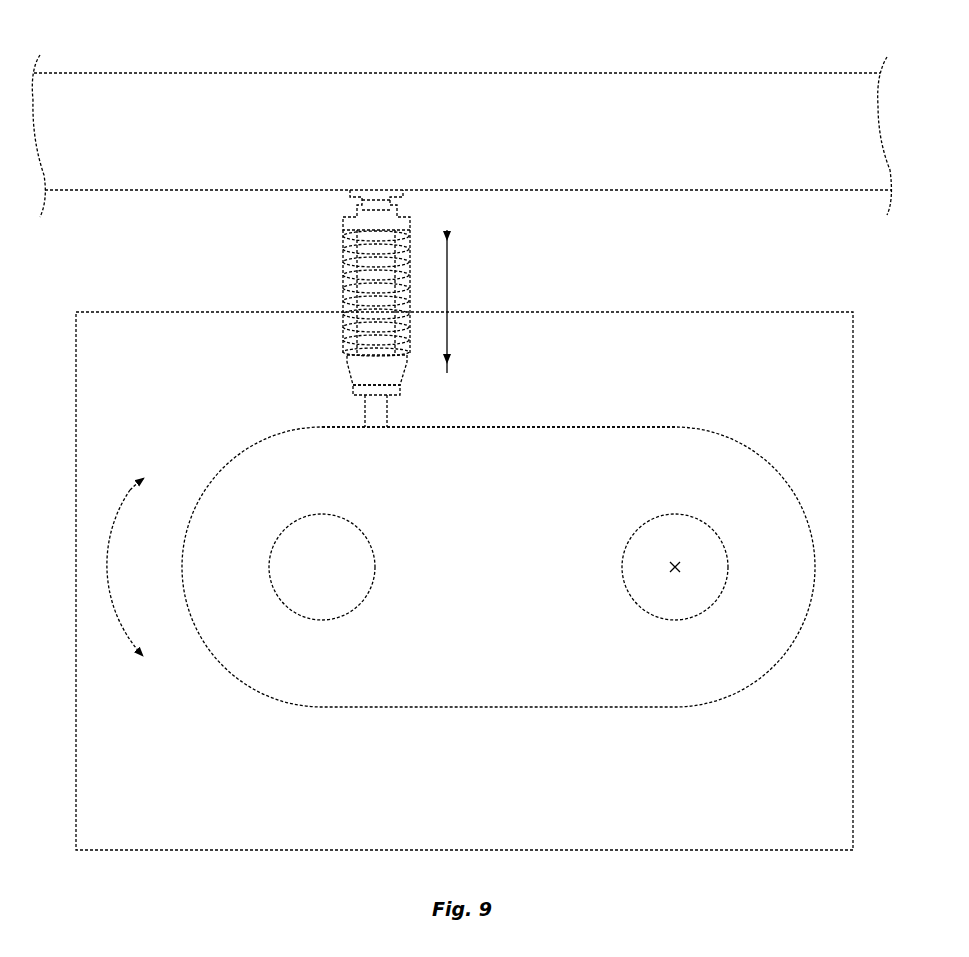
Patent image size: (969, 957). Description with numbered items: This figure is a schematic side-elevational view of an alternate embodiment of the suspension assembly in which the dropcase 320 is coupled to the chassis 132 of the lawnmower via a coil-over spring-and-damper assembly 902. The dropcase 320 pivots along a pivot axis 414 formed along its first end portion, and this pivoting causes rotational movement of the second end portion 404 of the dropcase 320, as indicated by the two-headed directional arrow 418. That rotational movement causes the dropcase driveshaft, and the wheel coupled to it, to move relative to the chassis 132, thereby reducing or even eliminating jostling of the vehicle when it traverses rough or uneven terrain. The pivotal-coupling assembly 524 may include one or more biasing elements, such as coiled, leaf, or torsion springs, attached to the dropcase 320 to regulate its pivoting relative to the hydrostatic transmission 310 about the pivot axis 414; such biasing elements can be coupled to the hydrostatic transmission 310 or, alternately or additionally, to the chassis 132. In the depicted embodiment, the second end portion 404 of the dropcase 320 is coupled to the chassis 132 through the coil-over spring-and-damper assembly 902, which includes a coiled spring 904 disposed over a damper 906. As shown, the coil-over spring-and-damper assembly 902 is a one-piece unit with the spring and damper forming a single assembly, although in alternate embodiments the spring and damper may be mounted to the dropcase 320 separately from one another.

The chassis 132 is at (307, 85).
The hydrostatic transmission 310 is at (128, 328).
The coil-over spring-and-damper assembly 902 is at (315, 254).
The damper 906 is at (350, 287).
The coiled spring 904 is at (348, 330).
The pivotal-coupling assembly 524 is at (526, 291).
The second end portion 404 is at (204, 436).
The dropcase 320 is at (528, 437).
The pivot axis 414 is at (674, 564).
The two-headed directional arrow 418 is at (130, 490).